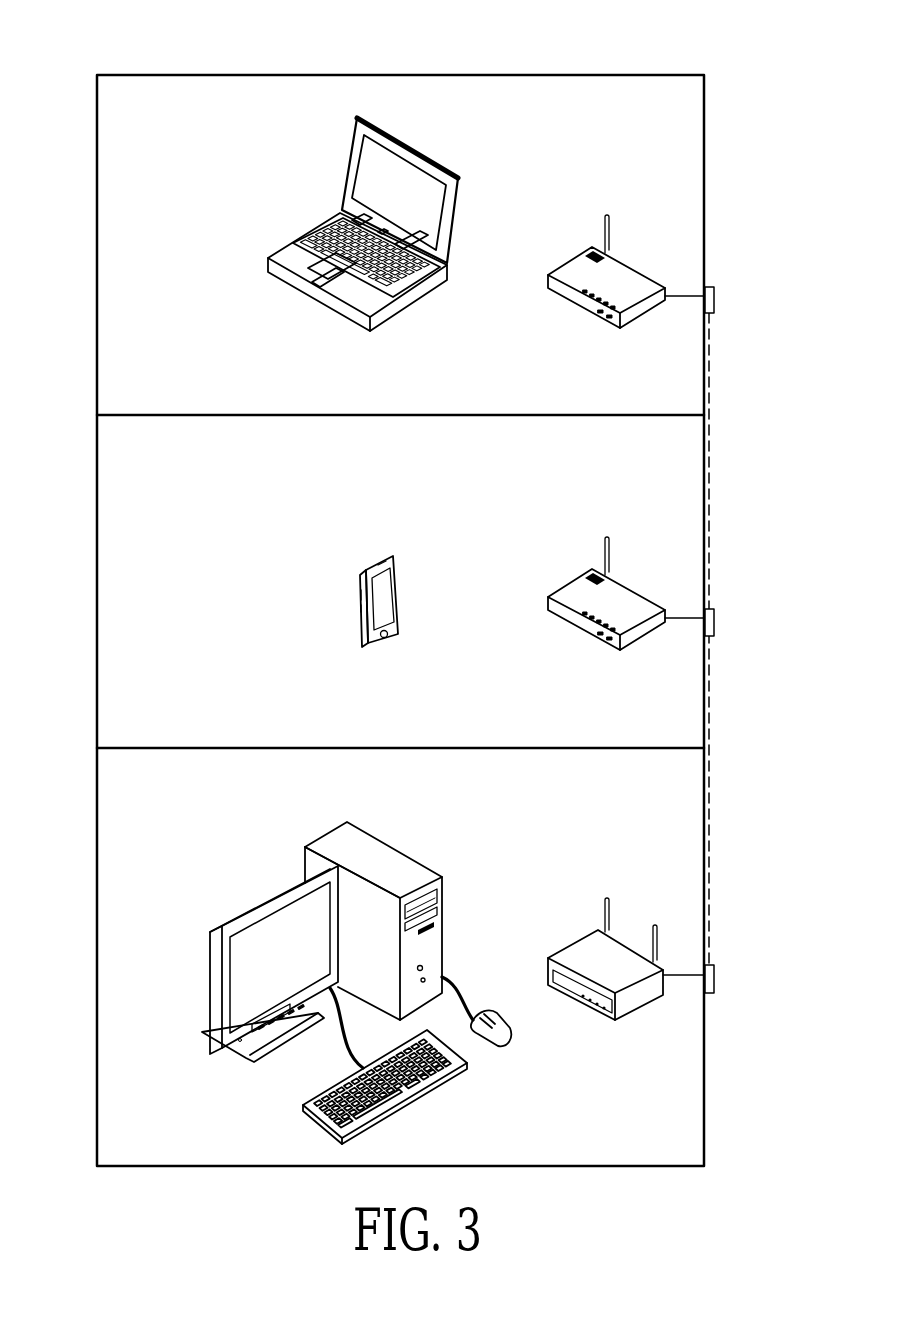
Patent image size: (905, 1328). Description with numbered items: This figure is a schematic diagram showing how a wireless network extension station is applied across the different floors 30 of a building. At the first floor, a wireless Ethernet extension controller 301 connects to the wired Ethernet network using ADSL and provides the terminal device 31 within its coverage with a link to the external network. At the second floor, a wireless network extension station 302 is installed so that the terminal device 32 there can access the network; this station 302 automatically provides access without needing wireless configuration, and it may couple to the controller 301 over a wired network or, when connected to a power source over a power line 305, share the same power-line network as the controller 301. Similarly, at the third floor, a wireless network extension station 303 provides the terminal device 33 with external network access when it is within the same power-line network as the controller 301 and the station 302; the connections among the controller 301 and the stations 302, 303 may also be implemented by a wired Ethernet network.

The floors 30 is at (58, 33).
The terminal device 31 is at (323, 833).
The terminal device 32 is at (362, 608).
The terminal device 33 is at (310, 241).
The wireless Ethernet extension controller 301 is at (640, 1006).
The wireless network extension station 302 is at (648, 639).
The wireless network extension station 303 is at (648, 317).
The power line 305 is at (712, 783).